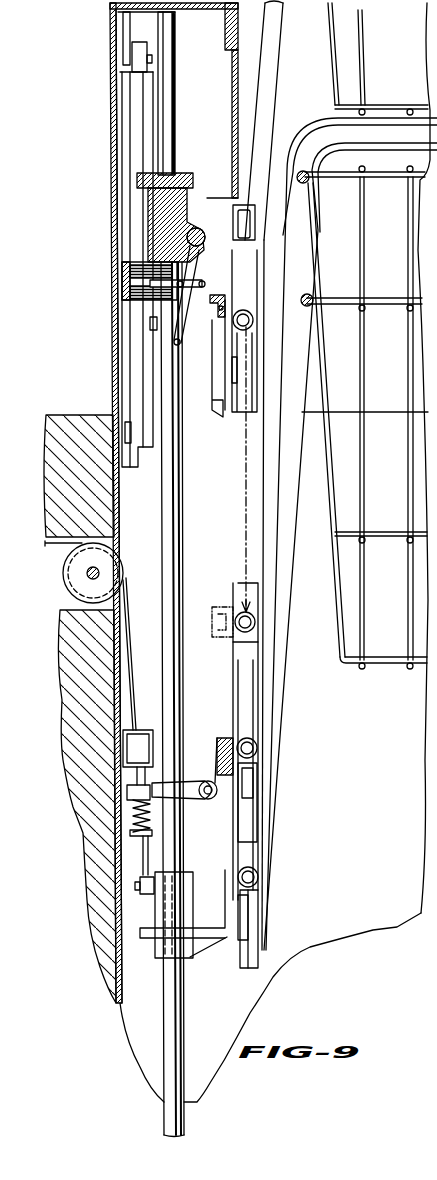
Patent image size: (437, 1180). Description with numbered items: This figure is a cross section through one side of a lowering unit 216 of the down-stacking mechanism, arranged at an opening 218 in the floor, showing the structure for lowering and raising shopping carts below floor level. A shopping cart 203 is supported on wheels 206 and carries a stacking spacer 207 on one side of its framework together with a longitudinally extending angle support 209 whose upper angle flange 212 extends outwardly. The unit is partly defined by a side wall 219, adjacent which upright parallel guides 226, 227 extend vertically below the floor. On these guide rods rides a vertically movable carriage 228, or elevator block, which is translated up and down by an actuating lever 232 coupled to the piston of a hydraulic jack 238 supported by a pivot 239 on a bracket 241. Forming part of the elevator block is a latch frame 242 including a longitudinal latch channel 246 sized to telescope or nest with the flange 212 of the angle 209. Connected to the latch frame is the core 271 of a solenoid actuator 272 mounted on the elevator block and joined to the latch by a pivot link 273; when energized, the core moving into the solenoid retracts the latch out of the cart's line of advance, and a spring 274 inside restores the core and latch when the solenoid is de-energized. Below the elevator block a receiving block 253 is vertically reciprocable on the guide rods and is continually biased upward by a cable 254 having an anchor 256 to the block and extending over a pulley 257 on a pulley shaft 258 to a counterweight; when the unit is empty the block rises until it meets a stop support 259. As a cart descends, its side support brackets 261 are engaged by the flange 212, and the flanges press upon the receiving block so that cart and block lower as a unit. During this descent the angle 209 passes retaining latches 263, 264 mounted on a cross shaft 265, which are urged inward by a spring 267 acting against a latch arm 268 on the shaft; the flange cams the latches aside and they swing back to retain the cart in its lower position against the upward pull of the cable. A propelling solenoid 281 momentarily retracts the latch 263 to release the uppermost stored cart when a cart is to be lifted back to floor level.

The lowering unit 216 is at (102, 68).
The side wall 219 is at (112, 144).
The bracket 241 is at (155, 32).
The pivot 239 is at (152, 57).
The guide 227 is at (172, 113).
The hydraulic jack 238 is at (127, 163).
The carriage 228 is at (157, 210).
The latch frame 242 is at (230, 215).
The shopping cart 203 is at (314, 133).
The stacking spacer 207 is at (287, 229).
The solenoid actuator 272 is at (124, 266).
The spring 274 is at (150, 284).
The core 271 is at (124, 300).
The pivot link 273 is at (178, 286).
The latch channel 246 is at (176, 342).
The angle support 209 is at (228, 321).
The actuating lever 232 is at (138, 393).
The opening 218 is at (223, 405).
The wheels 206 is at (242, 407).
The pulley shaft 258 is at (99, 568).
The guide 226 is at (178, 564).
The pulley 257 is at (91, 597).
The upper angle flange 212 is at (227, 740).
The retaining latch 263 is at (228, 738).
The retaining latch 264 is at (213, 773).
The cross shaft 265 is at (212, 793).
The latch arm 268 is at (192, 798).
The propelling solenoid 281 is at (124, 740).
The stop support 259 is at (124, 810).
The spring 267 is at (135, 813).
The cable 254 is at (141, 847).
The anchor 256 is at (142, 891).
The receiving block 253 is at (193, 958).
The side support bracket 261 is at (228, 905).